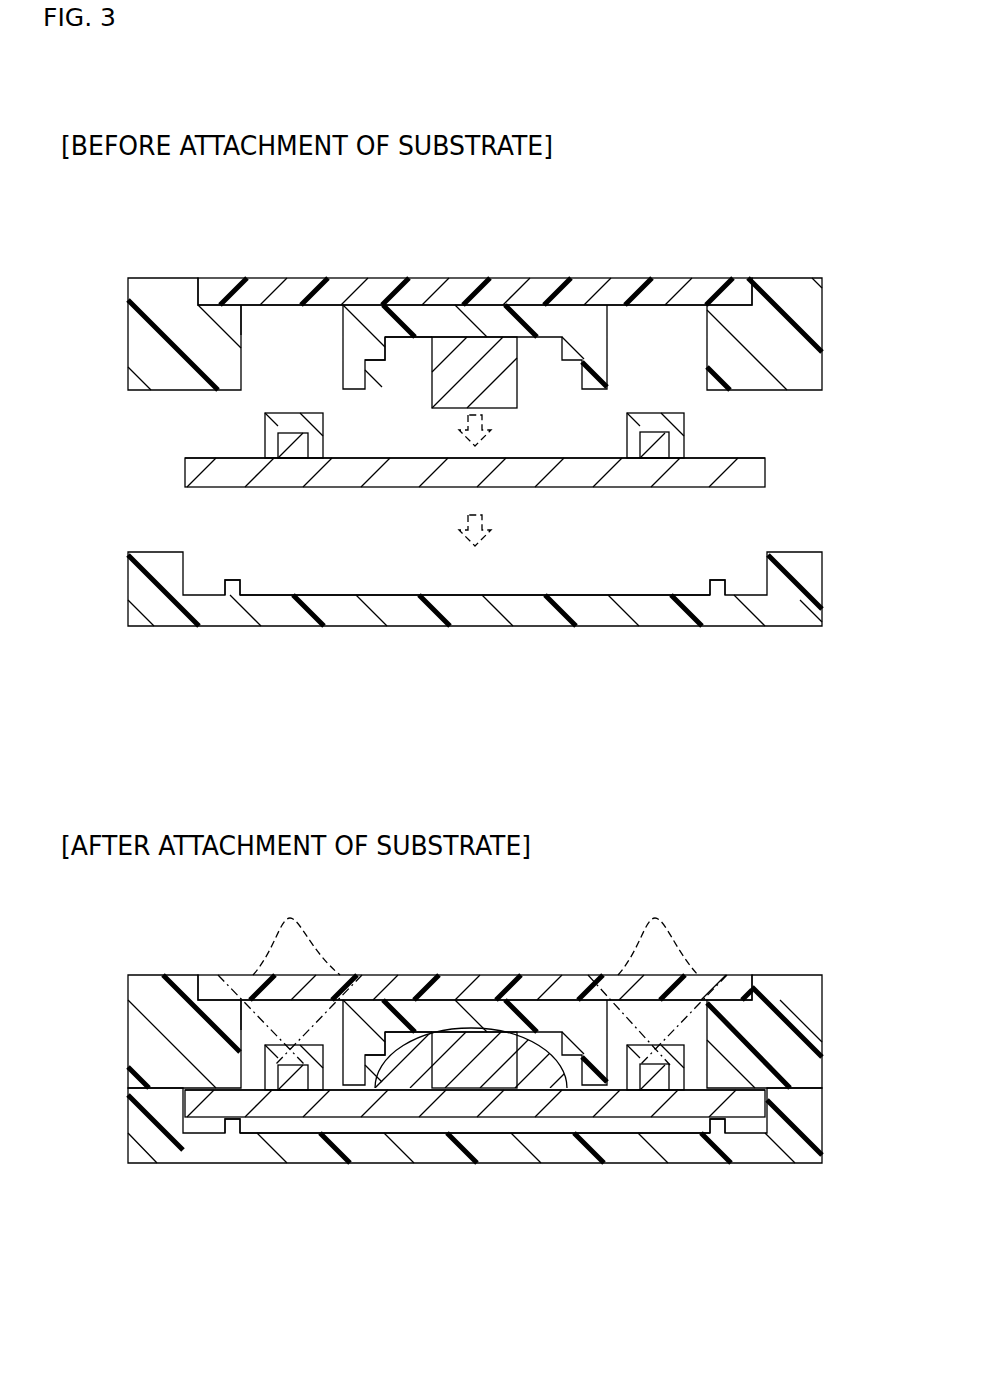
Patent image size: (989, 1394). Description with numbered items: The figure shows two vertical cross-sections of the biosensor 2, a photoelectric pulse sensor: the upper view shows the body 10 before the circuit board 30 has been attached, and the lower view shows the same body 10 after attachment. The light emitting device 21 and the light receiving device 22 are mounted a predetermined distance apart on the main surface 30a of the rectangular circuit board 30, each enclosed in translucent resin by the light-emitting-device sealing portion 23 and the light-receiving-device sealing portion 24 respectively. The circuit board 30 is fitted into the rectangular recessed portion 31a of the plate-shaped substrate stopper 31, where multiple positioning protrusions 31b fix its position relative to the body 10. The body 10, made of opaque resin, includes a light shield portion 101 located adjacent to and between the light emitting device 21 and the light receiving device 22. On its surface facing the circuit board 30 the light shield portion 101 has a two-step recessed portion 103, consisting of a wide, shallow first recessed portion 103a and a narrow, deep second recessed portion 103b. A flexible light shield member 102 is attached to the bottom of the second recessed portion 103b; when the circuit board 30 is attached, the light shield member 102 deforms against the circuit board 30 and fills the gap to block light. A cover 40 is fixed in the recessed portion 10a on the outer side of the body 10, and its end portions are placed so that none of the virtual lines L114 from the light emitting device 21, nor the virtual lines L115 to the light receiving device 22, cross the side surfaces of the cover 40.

The biosensor 2 is at (713, 225).
The body 10 is at (813, 272).
The recessed portion 10a is at (222, 308).
The light emitting device 21 is at (293, 450).
The light receiving device 22 is at (657, 448).
The light-emitting-device sealing portion 23 is at (317, 450).
The light-receiving-device sealing portion 24 is at (688, 458).
The circuit board 30 is at (420, 477).
The main surface 30a is at (353, 458).
The substrate stopper 31 is at (445, 605).
The recessed portion 31a is at (572, 598).
The positioning protrusions 31b is at (222, 585).
The cover 40 is at (560, 300).
The light shield portion 101 is at (165, 287).
The light shield member 102 is at (470, 352).
The recessed portion 103 is at (470, 350).
The first recessed portion 103a is at (378, 355).
The second recessed portion 103b is at (408, 330).
The virtual lines L114 is at (290, 978).
The virtual lines L115 is at (657, 978).